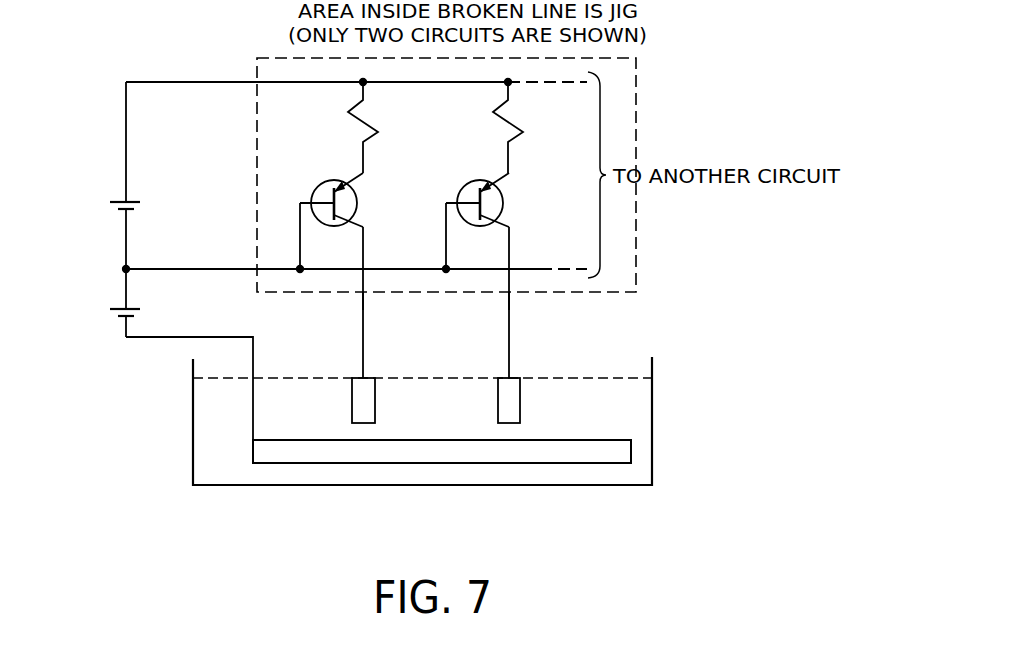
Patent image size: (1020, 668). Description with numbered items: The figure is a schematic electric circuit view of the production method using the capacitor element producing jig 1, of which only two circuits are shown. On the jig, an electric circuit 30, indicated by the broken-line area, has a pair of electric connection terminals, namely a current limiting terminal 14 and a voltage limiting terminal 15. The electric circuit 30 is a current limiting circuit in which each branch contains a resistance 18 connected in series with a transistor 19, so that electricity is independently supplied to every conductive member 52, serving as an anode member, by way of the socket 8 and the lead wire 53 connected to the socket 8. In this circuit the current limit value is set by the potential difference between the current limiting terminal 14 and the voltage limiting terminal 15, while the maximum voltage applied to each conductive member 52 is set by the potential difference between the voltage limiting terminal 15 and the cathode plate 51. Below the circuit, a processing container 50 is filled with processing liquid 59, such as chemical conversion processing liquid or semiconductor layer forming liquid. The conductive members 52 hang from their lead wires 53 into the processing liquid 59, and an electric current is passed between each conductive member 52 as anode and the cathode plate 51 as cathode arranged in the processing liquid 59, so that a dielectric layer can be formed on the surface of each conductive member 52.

The electric circuit 30 is at (312, 82).
The current limiting terminal 14 is at (253, 80).
The voltage limiting terminal 15 is at (253, 268).
The resistance 18 is at (512, 120).
The transistor 19 is at (512, 207).
The capacitor element producing jig 1 is at (360, 293).
The socket 8 is at (379, 355).
The lead wire 53 is at (363, 340).
The conductive member 52 is at (363, 413).
The cathode plate 51 is at (457, 455).
The processing container 50 is at (193, 422).
The processing liquid 59 is at (607, 408).